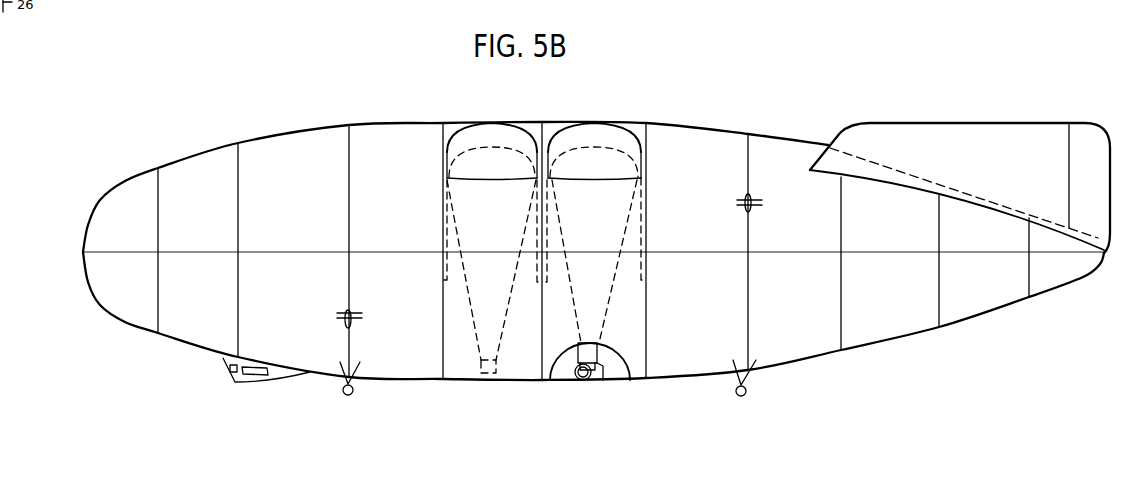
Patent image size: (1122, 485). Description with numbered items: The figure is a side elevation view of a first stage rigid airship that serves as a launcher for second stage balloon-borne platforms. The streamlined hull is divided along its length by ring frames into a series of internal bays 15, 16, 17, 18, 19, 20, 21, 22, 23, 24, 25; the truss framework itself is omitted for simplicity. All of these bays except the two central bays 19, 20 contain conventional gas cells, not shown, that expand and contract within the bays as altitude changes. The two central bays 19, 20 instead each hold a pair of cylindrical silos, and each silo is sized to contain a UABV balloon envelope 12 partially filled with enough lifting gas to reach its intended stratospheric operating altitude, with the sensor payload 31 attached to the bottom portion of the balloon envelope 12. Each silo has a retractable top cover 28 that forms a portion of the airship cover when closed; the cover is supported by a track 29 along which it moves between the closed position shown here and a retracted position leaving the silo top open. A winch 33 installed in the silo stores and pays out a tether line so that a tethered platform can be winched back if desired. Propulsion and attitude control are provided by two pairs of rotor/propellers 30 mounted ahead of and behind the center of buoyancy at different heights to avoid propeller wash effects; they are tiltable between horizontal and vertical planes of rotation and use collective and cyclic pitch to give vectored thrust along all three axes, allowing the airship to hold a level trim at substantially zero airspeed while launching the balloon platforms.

The UABV balloon envelope 12 is at (470, 188).
The internal bay 15 is at (113, 289).
The internal bay 16 is at (188, 289).
The internal bay 17 is at (284, 289).
The internal bay 18 is at (383, 289).
The central bay 19 is at (448, 345).
The central bay 20 is at (615, 335).
The internal bay 21 is at (683, 289).
The internal bay 22 is at (782, 289).
The internal bay 23 is at (870, 289).
The internal bay 24 is at (959, 289).
The internal bay 25 is at (1035, 276).
The retractable top cover 28 is at (480, 135).
The track 29 is at (442, 223).
The rotor/propeller 30 is at (347, 308).
The sensor payload 31 is at (602, 380).
The winch 33 is at (583, 380).